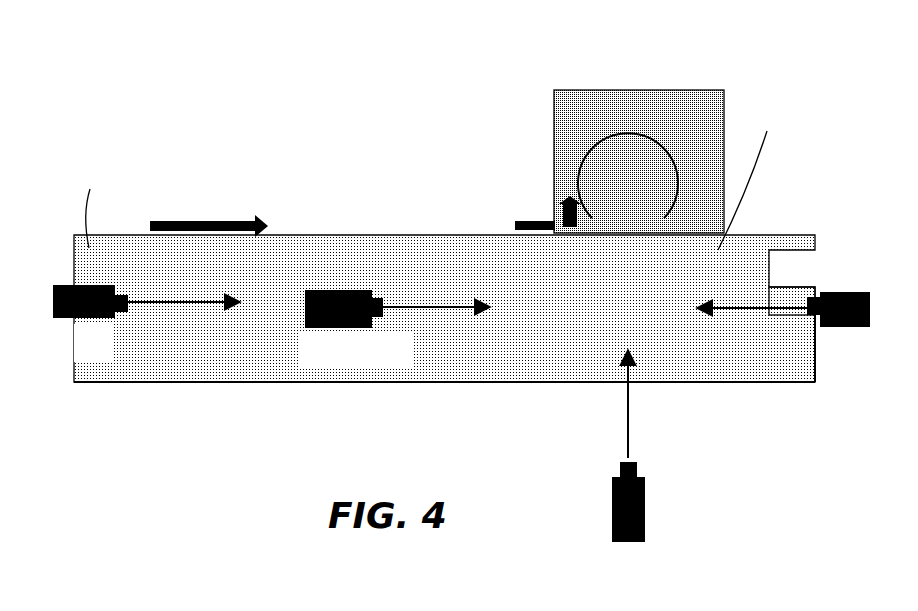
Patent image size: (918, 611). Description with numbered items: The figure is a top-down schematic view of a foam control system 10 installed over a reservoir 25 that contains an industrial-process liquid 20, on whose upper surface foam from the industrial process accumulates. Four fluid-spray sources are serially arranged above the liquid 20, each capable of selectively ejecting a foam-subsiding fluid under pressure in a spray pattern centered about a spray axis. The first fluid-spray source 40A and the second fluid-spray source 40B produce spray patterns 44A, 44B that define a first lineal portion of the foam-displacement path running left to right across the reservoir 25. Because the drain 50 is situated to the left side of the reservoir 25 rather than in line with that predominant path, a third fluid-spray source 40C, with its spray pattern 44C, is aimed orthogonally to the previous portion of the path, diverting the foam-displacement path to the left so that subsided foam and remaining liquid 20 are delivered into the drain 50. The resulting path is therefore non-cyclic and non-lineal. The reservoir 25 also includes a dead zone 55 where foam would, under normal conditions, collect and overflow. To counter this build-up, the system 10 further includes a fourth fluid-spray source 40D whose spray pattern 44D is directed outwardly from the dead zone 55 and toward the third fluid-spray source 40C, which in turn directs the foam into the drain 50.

The foam control system 10 is at (523, 173).
The industrial-process liquid 20 is at (782, 360).
The reservoir 25 is at (467, 380).
The first fluid-spray source 40A is at (60, 300).
The second fluid-spray source 40B is at (320, 307).
The third fluid-spray source 40C is at (637, 512).
The fourth fluid-spray source 40D is at (839, 300).
The spray pattern of first fluid-spray source 44A is at (243, 335).
The spray pattern of second fluid-spray source 44B is at (515, 318).
The spray pattern of third fluid-spray source 44C is at (645, 408).
The spray pattern of fourth fluid-spray source 44D is at (760, 323).
The drain 50 is at (632, 184).
The dead zone 55 is at (786, 283).